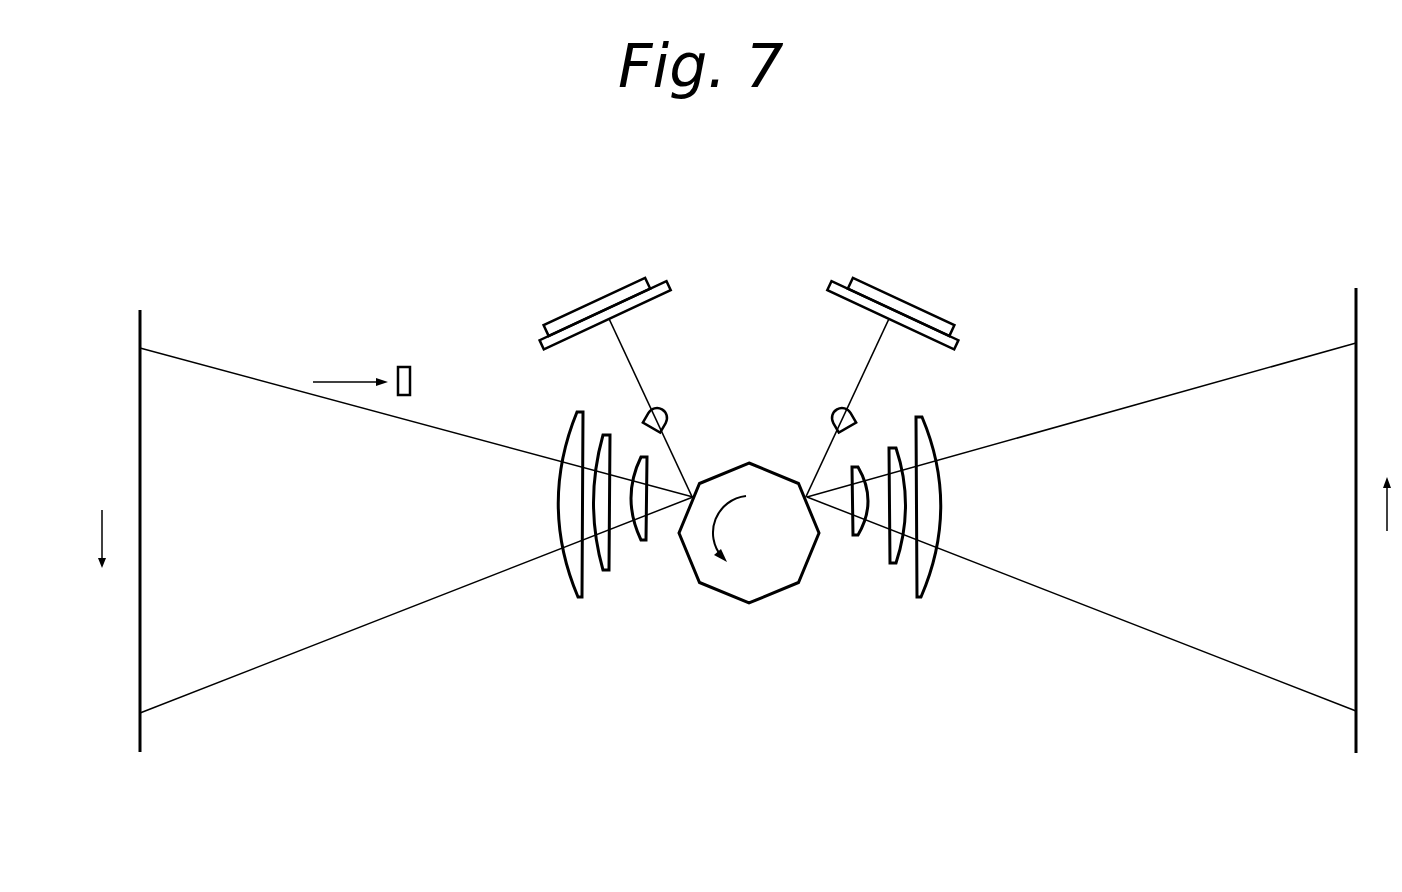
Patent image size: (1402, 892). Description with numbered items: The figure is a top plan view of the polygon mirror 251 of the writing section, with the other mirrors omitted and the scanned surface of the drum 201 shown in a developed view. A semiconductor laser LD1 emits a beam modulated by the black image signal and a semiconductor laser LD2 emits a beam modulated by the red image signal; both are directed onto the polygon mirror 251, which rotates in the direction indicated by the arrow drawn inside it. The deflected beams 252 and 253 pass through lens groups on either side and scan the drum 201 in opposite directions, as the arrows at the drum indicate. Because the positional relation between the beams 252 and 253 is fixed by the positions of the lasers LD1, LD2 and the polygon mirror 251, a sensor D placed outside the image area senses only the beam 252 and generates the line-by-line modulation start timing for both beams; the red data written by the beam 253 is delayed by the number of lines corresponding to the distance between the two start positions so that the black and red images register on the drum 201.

The drum 201 is at (138, 733).
The polygon mirror 251 is at (728, 595).
The beam 252 is at (400, 610).
The beam 253 is at (1102, 613).
The semiconductor laser LD1 is at (642, 282).
The semiconductor laser LD2 is at (875, 294).
The sensor D is at (404, 366).